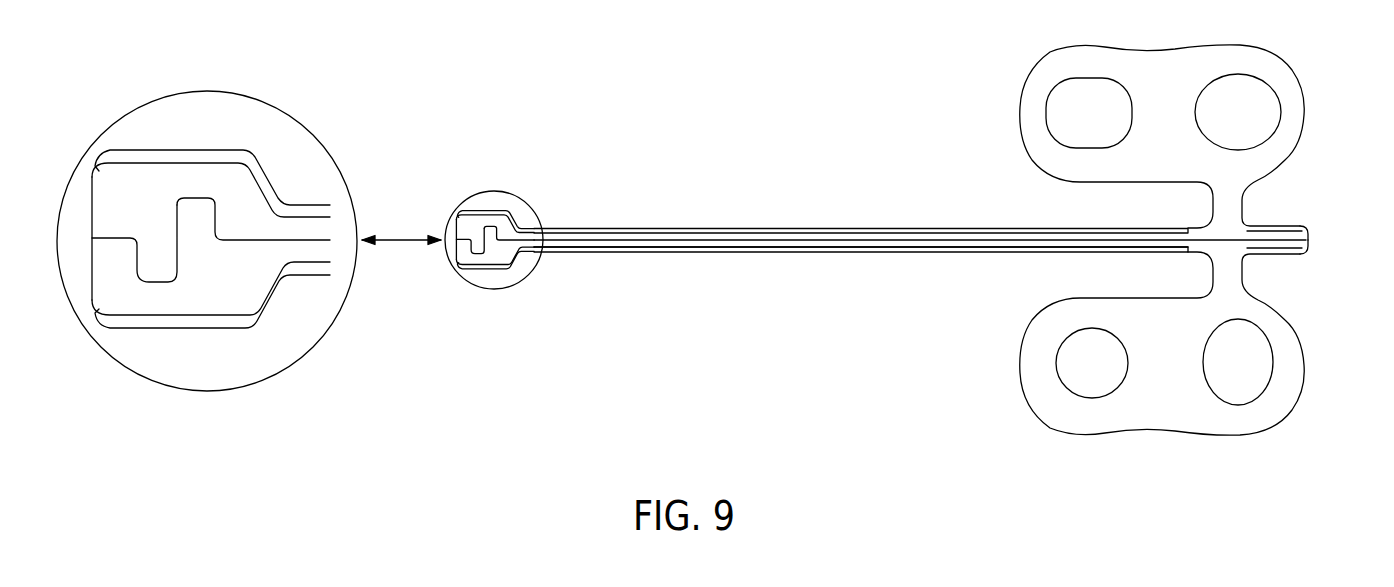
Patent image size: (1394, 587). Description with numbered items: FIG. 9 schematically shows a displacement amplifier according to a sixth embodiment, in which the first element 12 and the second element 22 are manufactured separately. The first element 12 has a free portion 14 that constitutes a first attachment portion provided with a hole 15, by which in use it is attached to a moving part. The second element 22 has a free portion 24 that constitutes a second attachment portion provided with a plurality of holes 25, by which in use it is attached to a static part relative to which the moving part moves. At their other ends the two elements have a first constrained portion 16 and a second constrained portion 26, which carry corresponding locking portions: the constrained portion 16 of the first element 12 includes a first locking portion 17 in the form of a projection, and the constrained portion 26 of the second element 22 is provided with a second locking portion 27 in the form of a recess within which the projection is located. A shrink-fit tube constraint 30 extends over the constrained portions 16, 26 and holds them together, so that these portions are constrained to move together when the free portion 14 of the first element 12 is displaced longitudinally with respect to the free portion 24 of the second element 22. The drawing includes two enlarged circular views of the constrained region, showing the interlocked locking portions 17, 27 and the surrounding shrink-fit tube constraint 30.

The first element 12 is at (641, 234).
The free portion of the first element 14 is at (1288, 232).
The hole 15 is at (1258, 118).
The constrained portion of the first element 16 is at (504, 222).
The first locking portion 17 is at (199, 197).
The second element 22 is at (650, 247).
The free portion of the second element 24 is at (1298, 244).
The holes 25 is at (1258, 361).
The constrained portion of the second element 26 is at (503, 259).
The second locking portion 27 is at (170, 283).
The shrink-fit tube constraint 30 is at (158, 150).